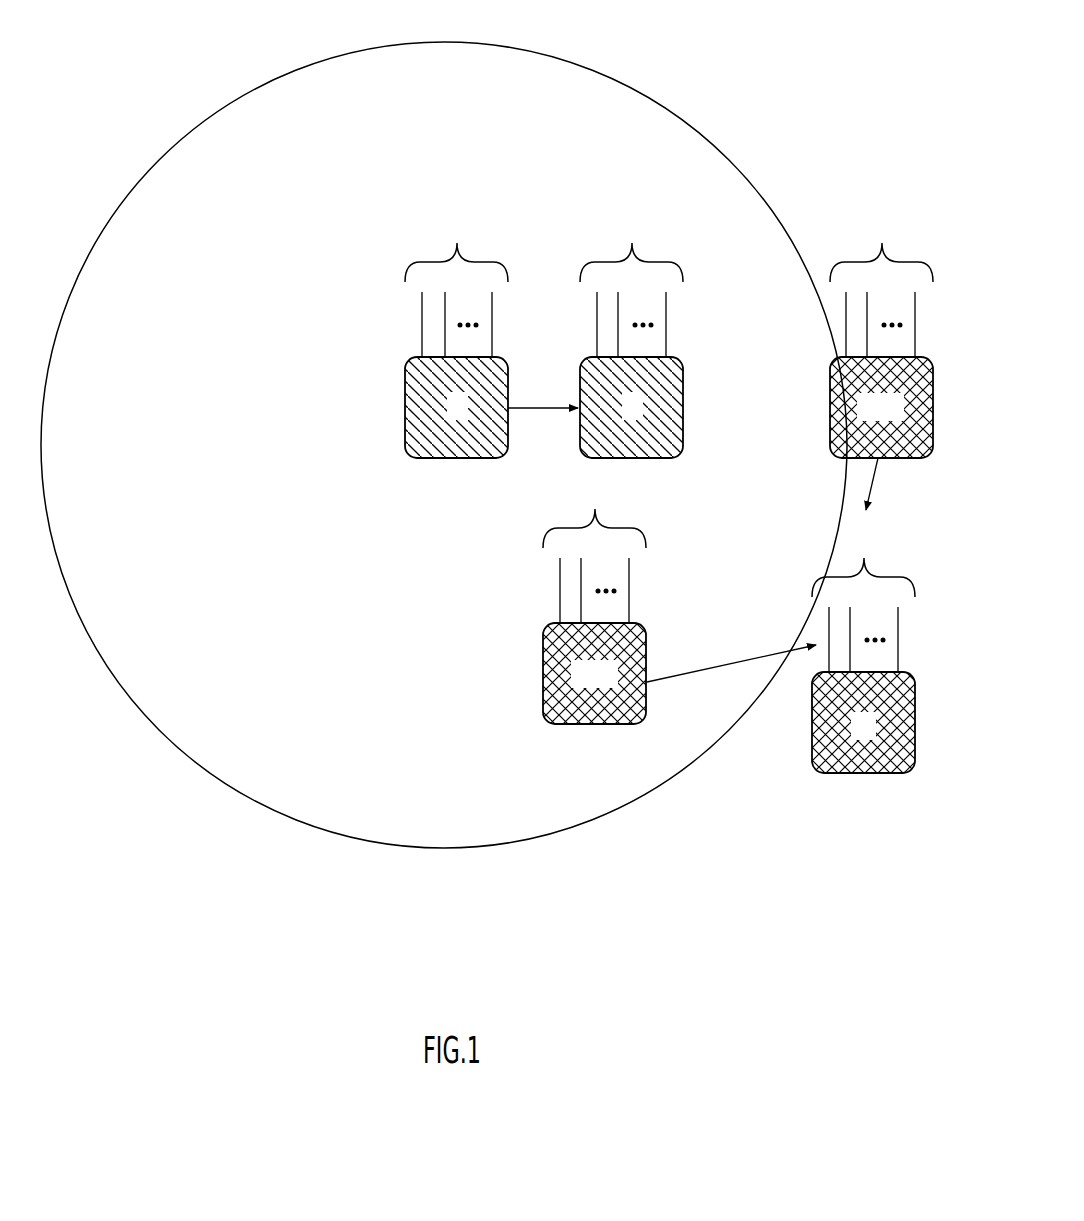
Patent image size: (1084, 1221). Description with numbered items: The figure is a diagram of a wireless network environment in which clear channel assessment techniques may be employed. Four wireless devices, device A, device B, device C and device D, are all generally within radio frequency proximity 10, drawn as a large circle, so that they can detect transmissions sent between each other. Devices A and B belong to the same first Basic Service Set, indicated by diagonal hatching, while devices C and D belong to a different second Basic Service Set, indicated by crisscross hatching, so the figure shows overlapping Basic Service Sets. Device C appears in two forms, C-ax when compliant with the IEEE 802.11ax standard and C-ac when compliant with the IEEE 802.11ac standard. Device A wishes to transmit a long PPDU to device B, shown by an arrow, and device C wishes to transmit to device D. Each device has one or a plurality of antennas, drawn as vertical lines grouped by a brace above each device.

The radio frequency proximity 10 is at (682, 118).